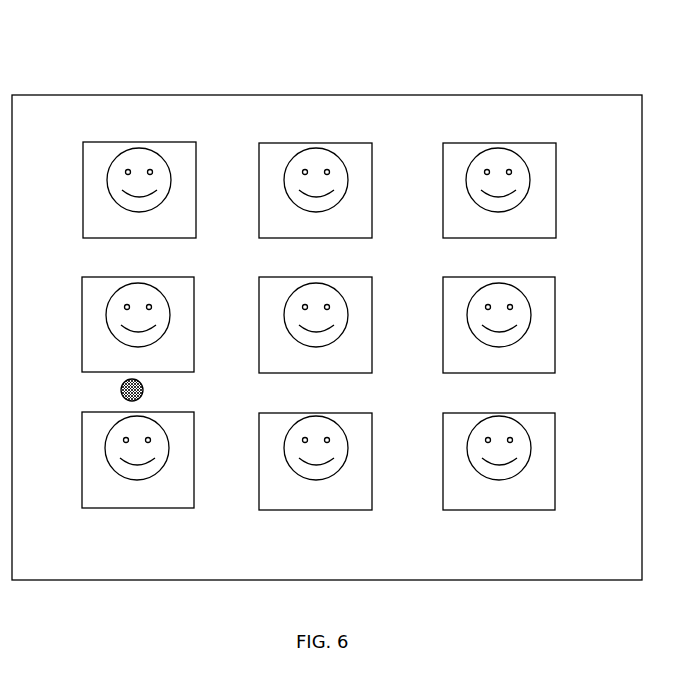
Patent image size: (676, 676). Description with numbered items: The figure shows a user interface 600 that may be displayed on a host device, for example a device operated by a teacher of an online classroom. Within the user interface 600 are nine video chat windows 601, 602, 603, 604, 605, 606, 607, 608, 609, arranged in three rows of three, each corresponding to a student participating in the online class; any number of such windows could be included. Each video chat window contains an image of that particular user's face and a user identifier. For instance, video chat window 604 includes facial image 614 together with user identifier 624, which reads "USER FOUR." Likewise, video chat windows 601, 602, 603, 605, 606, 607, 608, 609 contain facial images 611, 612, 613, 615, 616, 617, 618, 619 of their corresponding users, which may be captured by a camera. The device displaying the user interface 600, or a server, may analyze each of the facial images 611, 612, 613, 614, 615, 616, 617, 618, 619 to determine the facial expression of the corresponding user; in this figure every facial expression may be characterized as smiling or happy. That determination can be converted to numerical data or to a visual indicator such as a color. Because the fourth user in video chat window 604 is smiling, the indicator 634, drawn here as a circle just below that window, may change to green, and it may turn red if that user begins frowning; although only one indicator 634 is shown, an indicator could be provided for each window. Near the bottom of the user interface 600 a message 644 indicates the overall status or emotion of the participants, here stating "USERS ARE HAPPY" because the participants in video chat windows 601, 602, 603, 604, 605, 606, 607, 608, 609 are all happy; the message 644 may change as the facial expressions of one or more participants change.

The user interface 600 is at (618, 78).
The video chat window 601 is at (110, 186).
The video chat window 602 is at (287, 186).
The video chat window 603 is at (503, 186).
The video chat window 604 is at (109, 320).
The video chat window 605 is at (322, 321).
The video chat window 606 is at (504, 321).
The video chat window 607 is at (109, 460).
The video chat window 608 is at (322, 457).
The video chat window 609 is at (504, 457).
The facial image 611 is at (108, 186).
The facial image 612 is at (284, 181).
The facial image 613 is at (531, 178).
The facial image 614 is at (105, 318).
The facial image 615 is at (348, 320).
The facial image 616 is at (532, 317).
The facial image 617 is at (108, 464).
The facial image 618 is at (348, 450).
The facial image 619 is at (532, 450).
The user identifier 624 is at (100, 360).
The indicator 634 is at (116, 390).
The message 644 is at (237, 549).